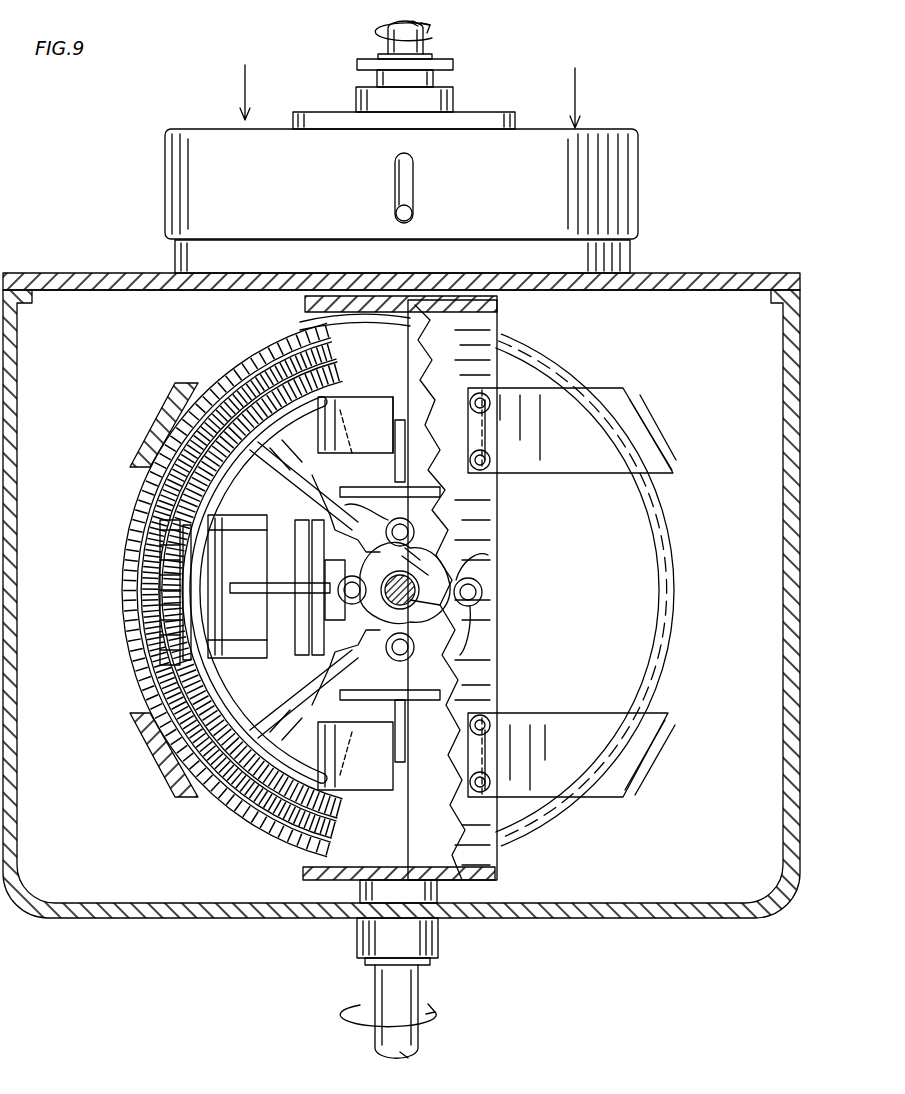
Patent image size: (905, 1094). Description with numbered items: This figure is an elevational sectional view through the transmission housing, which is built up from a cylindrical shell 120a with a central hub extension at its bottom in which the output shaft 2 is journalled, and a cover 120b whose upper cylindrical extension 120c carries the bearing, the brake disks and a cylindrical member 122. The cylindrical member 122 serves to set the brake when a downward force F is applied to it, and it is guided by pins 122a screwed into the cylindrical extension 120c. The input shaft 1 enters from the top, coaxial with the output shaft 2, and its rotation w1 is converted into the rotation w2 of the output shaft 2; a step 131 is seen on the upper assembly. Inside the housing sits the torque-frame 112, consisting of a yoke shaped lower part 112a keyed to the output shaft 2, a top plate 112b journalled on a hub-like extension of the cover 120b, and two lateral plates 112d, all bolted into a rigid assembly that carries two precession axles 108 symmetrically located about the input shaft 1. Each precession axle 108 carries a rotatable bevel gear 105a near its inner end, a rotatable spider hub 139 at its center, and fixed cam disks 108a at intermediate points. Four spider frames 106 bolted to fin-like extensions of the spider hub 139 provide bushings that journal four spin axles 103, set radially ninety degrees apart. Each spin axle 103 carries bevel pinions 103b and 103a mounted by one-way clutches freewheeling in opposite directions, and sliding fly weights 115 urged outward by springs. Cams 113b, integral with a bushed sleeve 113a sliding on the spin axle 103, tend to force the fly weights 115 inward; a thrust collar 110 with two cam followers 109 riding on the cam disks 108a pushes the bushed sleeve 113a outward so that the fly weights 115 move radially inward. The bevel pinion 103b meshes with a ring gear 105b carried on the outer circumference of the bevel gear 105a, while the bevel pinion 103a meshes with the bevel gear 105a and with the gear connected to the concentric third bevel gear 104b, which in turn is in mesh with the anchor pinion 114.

The input shaft 1 is at (425, 47).
The output shaft 2 is at (410, 1040).
The input rotation w1 is at (421, 26).
The output rotation w2 is at (404, 1006).
The downward force F is at (245, 82).
The spin axle 103 is at (290, 595).
The bevel pinion 103a is at (300, 350).
The bevel pinion 103b is at (315, 333).
The third bevel gear 104b is at (135, 492).
The bevel gear 105a is at (185, 680).
The ring gear 105b is at (165, 665).
The spider frame 106 is at (195, 515).
The precession axle 108 is at (452, 595).
The cam disk 108a is at (419, 590).
The cam follower 109 is at (478, 556).
The thrust collar 110 is at (380, 520).
The torque-frame 112 is at (498, 505).
The yoke shaped lower part 112a is at (303, 875).
The top plate 112b is at (305, 304).
The lateral plate 112d is at (160, 420).
The bushed sleeve 113a is at (305, 650).
The cam 113b is at (468, 440).
The anchor pinion 114 is at (320, 323).
The fly weight 115 is at (300, 593).
The cylindrical shell 120a is at (120, 918).
The cover 120b is at (110, 273).
The upper cylindrical extension 120c is at (630, 262).
The cylindrical member 122 is at (638, 160).
The pin 122a is at (413, 210).
The step 131 is at (453, 100).
The spider hub 139 is at (346, 590).